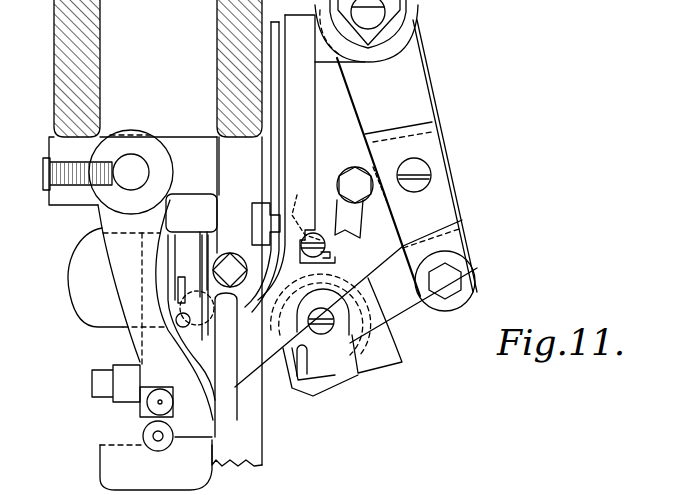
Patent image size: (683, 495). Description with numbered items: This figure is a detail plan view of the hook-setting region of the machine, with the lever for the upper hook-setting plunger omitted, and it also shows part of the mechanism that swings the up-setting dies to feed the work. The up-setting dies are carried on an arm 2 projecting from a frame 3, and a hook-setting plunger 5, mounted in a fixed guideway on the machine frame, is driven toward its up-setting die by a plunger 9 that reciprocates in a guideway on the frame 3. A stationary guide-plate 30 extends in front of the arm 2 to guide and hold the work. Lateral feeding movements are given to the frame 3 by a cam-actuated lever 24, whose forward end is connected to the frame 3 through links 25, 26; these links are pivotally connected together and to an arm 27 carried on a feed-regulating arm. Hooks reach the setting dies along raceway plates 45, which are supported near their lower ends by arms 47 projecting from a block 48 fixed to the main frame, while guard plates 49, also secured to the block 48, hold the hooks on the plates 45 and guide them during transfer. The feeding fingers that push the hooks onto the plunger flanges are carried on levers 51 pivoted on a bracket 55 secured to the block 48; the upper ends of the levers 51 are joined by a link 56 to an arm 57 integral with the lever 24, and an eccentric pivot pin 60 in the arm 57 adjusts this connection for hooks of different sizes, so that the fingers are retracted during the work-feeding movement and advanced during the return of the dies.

The arm 2 is at (137, 340).
The frame 3 is at (92, 312).
The hook-setting plunger 5 is at (150, 440).
The plunger 9 is at (150, 398).
The cam-actuated lever 24 is at (448, 212).
The link 25 is at (428, 312).
The link 26 is at (312, 355).
The arm 27 is at (358, 374).
The guide-plate 30 is at (156, 463).
The raceway plate 45 is at (305, 133).
The arm 47 is at (303, 190).
The block 48 is at (255, 214).
The guard plate 49 is at (271, 160).
The lever 51 is at (352, 225).
The bracket 55 is at (330, 255).
The link 56 is at (355, 167).
The arm 57 is at (420, 98).
The pivot pin 60 is at (425, 172).